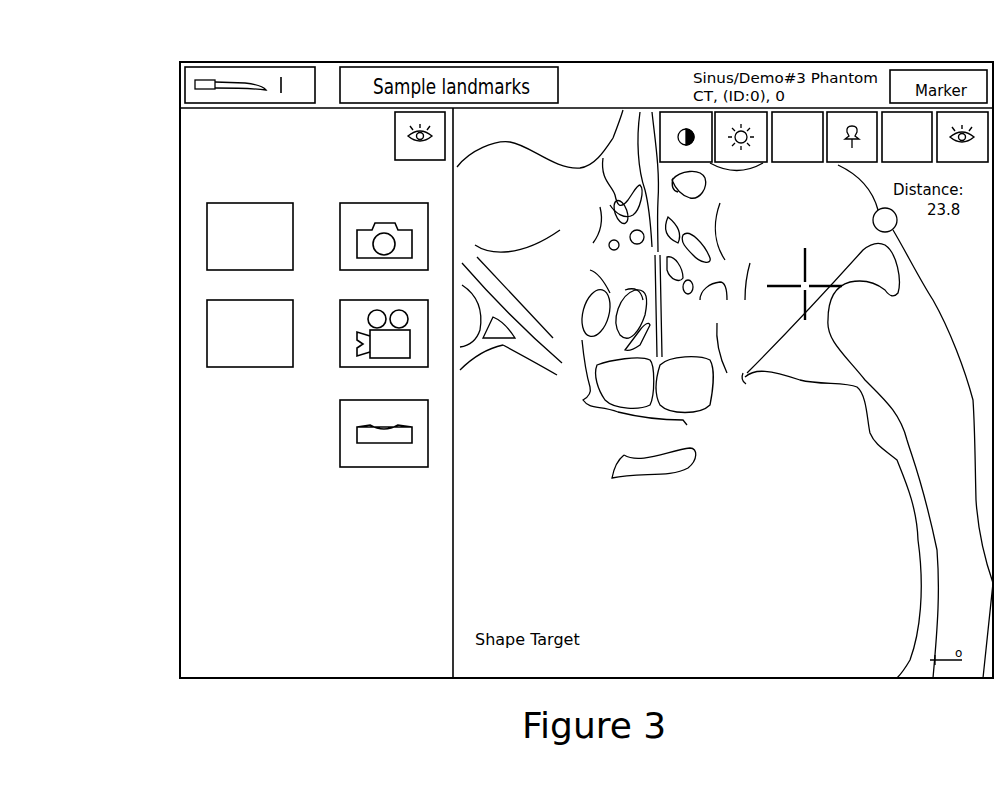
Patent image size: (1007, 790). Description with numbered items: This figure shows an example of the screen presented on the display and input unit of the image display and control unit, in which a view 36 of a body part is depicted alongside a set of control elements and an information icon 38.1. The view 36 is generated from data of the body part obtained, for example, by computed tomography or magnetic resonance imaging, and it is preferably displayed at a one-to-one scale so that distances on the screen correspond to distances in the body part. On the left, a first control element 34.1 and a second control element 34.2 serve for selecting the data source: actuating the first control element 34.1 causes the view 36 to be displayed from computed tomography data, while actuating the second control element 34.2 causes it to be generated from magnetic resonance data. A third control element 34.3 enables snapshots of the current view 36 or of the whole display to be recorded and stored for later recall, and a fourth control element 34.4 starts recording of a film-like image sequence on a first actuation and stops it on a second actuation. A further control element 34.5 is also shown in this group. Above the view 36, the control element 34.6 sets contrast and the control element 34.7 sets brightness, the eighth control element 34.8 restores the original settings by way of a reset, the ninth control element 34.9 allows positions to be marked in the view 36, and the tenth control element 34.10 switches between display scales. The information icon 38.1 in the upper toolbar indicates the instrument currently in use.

The information icon 38.1 is at (215, 80).
The first control element 34.1 is at (218, 225).
The second control element 34.2 is at (218, 353).
The third control element 34.3 is at (372, 252).
The fourth control element 34.4 is at (350, 361).
The shape target button 34.5 is at (352, 420).
The control element 34.6 is at (677, 116).
The control element 34.7 is at (736, 116).
The eighth control element 34.8 is at (795, 116).
The ninth control element 34.9 is at (870, 116).
The tenth control element 34.10 is at (897, 116).
The view 36 is at (792, 662).